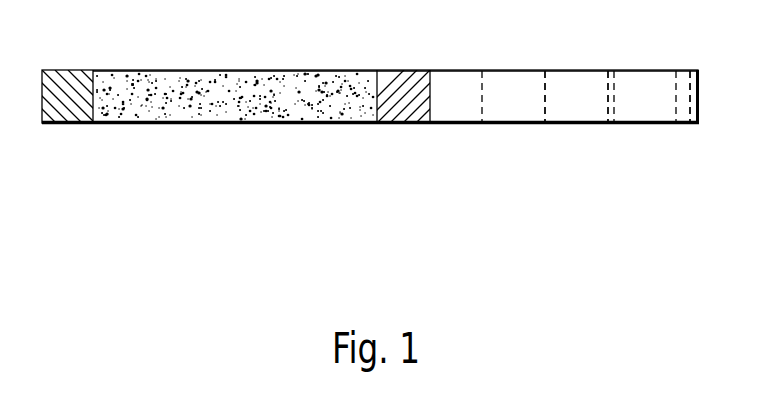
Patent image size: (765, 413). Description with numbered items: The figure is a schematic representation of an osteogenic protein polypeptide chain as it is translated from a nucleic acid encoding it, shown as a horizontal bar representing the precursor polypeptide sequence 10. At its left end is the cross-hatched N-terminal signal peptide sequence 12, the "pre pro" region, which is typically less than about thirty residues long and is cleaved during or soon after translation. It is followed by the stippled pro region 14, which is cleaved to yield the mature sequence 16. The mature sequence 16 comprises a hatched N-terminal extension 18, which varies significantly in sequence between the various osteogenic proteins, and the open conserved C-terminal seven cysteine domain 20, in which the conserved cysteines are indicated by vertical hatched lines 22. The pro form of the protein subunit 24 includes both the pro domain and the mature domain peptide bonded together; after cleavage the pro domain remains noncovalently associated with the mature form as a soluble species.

The precursor polypeptide sequence 10 is at (42, 228).
The N-terminal signal peptide sequence 12 is at (63, 80).
The pro region 14 is at (182, 90).
The mature sequence 16 is at (378, 131).
The N-terminal extension 18 is at (395, 82).
The conserved C-terminal seven cysteine domain 20 is at (563, 82).
The vertical hatched lines 22 is at (692, 67).
The pro form of the protein subunit 24 is at (698, 180).